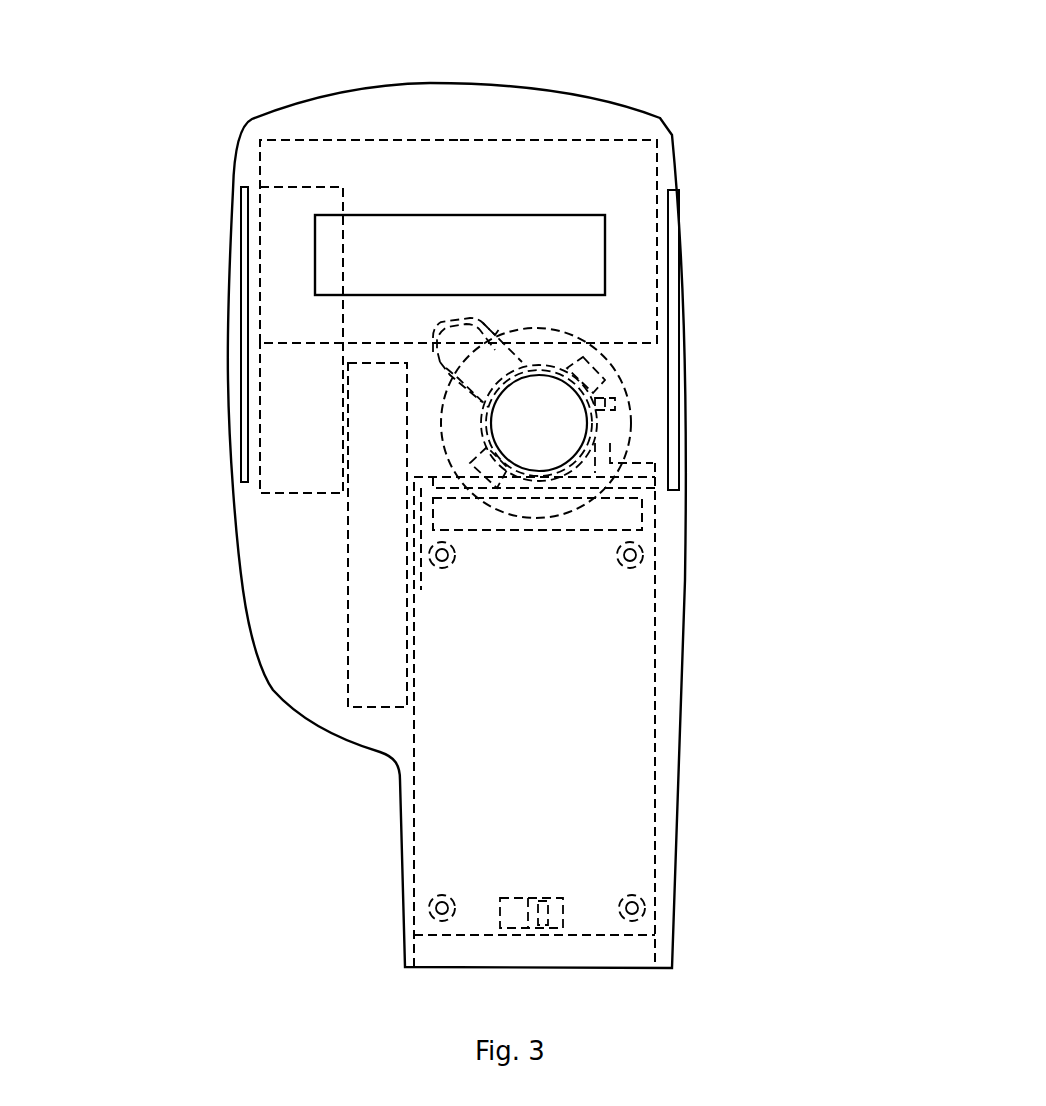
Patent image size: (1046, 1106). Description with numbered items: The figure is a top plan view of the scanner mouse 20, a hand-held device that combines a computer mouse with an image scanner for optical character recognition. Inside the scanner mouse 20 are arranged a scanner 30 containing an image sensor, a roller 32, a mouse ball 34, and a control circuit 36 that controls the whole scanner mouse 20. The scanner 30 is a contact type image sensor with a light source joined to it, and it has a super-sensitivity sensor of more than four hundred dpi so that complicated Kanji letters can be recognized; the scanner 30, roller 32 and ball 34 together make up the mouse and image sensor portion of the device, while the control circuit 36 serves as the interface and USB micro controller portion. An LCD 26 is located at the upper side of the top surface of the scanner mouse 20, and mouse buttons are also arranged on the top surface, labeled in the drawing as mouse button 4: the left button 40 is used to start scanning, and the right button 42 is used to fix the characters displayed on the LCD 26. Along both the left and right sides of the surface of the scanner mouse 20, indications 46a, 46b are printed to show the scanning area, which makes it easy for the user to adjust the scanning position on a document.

The scanner mouse 20 is at (472, 85).
The LCD 26 is at (542, 242).
The scanner 30 is at (287, 432).
The roller 32 is at (363, 610).
The mouse ball 34 is at (560, 438).
The control circuit 36 is at (625, 720).
The mouse button 4 is at (532, 550).
The left button 40 is at (434, 646).
The right button 42 is at (640, 607).
The indication of scanning area 46a is at (245, 313).
The indication of scanning area 46b is at (675, 328).